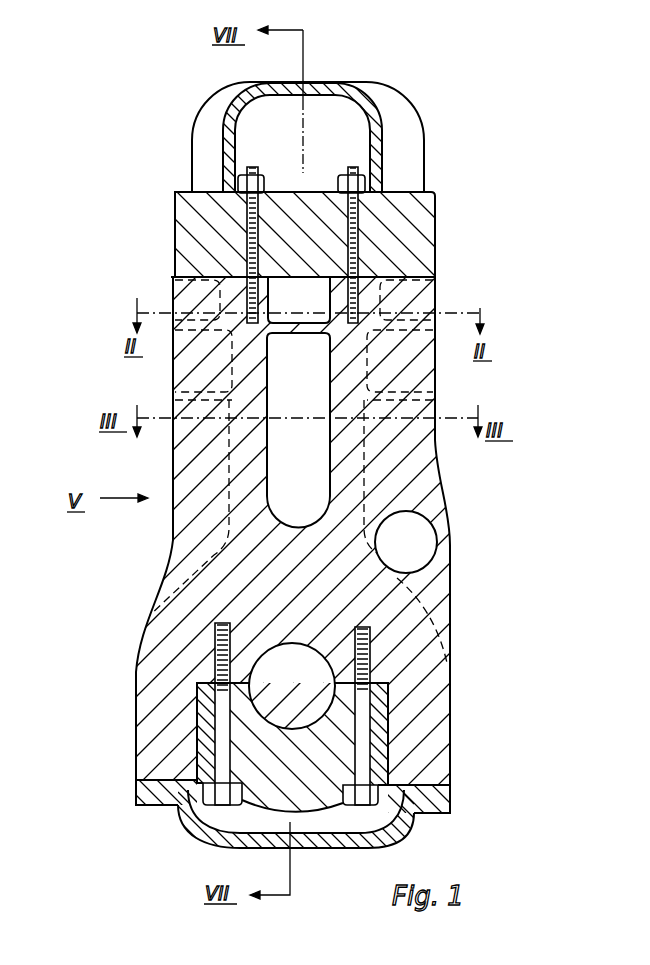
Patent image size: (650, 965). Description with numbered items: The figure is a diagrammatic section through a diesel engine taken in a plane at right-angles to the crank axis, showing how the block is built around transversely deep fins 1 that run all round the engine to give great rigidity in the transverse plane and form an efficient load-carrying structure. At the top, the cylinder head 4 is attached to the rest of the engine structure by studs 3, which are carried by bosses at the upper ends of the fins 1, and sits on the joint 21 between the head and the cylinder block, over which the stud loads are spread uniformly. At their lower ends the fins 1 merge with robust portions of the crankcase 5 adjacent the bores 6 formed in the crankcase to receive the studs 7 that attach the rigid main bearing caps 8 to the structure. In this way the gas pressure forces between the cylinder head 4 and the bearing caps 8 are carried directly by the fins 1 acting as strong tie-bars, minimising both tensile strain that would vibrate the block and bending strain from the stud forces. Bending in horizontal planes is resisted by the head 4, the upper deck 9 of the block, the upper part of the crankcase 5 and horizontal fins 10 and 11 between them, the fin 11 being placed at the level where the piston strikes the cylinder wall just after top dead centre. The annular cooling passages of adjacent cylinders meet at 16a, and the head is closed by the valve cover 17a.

The fins 1 is at (172, 462).
The studs 3 is at (347, 173).
The cylinder head 4 is at (437, 237).
The crankcase 5 is at (436, 617).
The bores 6 is at (217, 641).
The studs 7 is at (217, 730).
The main bearing caps 8 is at (322, 812).
The upper deck 9 is at (435, 285).
The horizontal fin 10 is at (436, 345).
The horizontal fin 11 is at (437, 398).
The meeting point of annular passages 16a is at (305, 305).
The valve cover 17a is at (425, 138).
The joint 21 is at (171, 268).